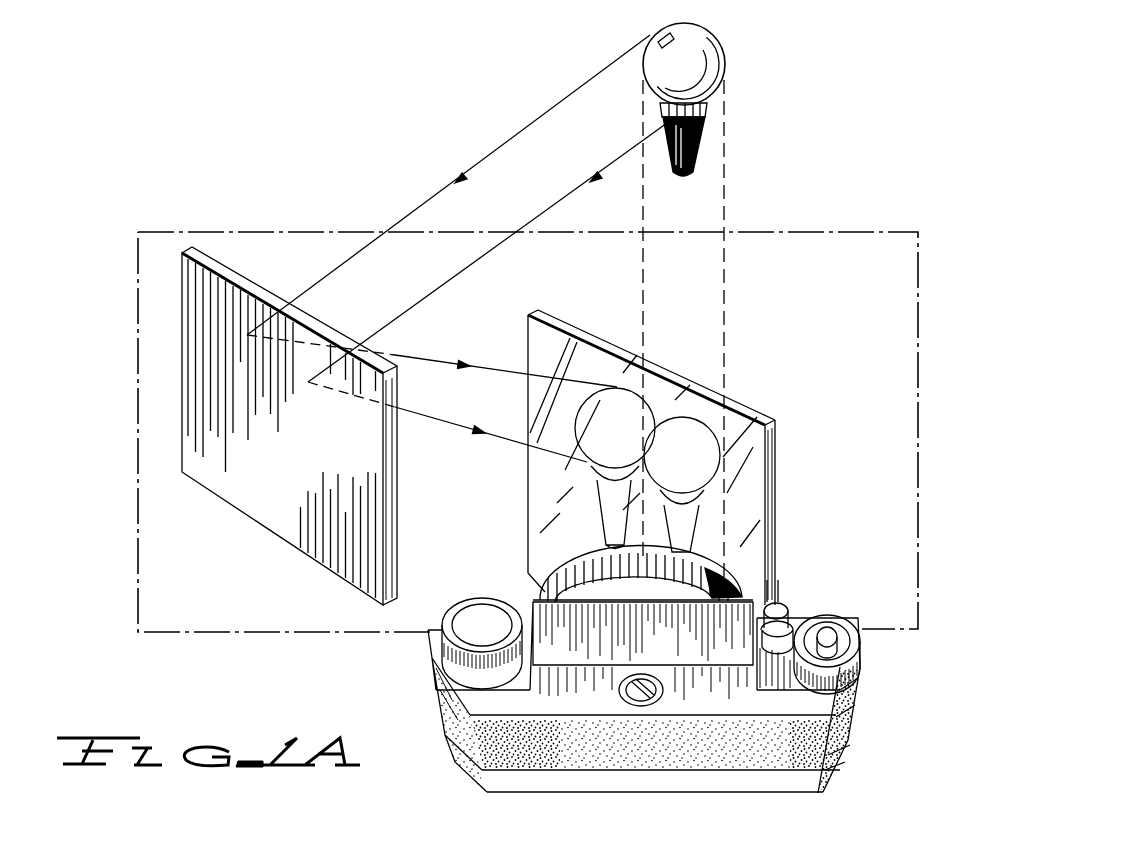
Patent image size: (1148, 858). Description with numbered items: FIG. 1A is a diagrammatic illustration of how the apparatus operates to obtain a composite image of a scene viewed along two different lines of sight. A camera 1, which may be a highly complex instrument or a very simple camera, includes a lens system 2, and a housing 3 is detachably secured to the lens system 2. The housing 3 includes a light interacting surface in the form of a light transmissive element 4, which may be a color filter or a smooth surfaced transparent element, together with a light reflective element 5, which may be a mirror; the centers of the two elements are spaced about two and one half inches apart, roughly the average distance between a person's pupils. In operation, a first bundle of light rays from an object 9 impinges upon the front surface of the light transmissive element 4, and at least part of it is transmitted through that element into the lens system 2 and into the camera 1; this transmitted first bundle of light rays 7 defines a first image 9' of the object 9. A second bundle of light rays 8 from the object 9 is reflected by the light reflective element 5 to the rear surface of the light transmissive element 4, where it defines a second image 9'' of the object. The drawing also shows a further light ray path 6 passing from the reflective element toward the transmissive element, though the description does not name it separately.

The camera 1 is at (852, 718).
The lens system 2 is at (576, 562).
The housing 3 is at (862, 234).
The light transmissive element 4 is at (742, 410).
The light reflective element 5 is at (249, 268).
The reflected light beam 6 is at (445, 423).
The transmitted first bundle of light rays 7 is at (745, 507).
The second bundle of light rays 8 is at (503, 148).
The object 9 is at (684, 113).
The first image 9' is at (682, 484).
The second image 9'' is at (604, 468).